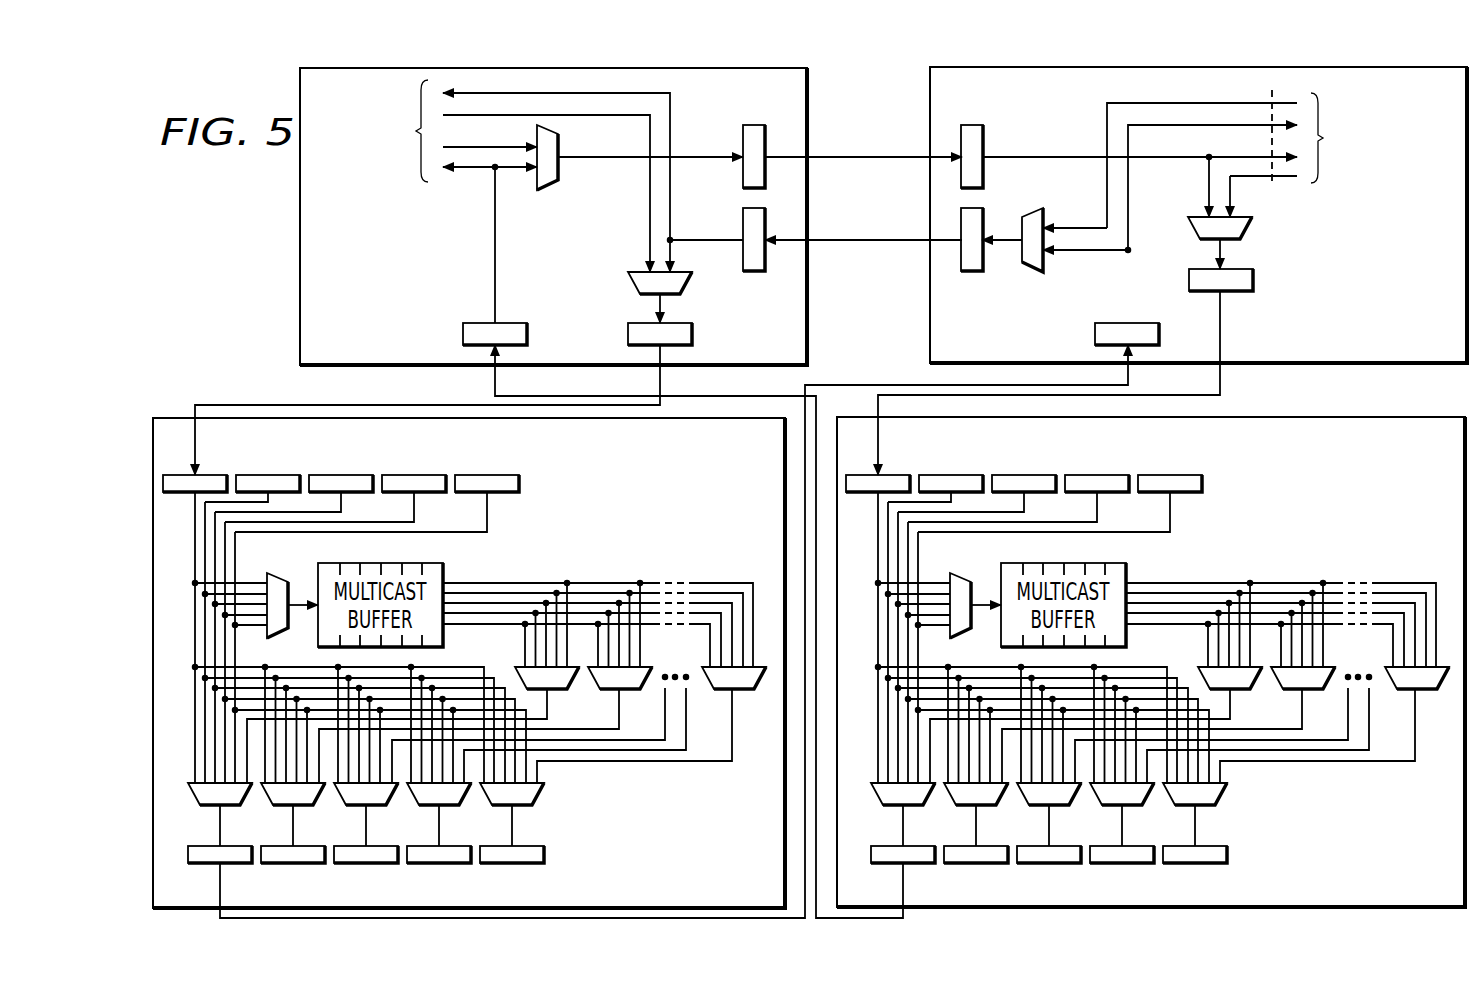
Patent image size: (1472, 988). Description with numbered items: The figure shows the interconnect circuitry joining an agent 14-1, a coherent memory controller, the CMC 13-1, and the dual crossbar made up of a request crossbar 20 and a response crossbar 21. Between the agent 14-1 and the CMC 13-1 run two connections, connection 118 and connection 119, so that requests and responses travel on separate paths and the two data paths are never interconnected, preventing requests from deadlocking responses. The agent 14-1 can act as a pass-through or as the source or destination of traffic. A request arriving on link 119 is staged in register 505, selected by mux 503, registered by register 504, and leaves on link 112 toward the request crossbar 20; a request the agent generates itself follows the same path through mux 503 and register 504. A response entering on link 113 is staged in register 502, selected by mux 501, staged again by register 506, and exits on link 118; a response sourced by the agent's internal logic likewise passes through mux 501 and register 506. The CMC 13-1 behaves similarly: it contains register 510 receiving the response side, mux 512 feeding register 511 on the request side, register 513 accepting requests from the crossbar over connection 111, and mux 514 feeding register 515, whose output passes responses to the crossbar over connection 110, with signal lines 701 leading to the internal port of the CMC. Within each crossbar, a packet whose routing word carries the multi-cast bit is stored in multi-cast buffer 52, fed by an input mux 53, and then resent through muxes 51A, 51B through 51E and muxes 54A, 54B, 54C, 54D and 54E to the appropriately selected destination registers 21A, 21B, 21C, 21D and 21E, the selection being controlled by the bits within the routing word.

The agent 14-1 is at (300, 257).
The CMC 13-1 is at (930, 323).
The mux 501 is at (560, 165).
The register 502 is at (508, 322).
The mux 503 is at (640, 271).
The register 504 is at (692, 335).
The register 505 is at (743, 225).
The register 506 is at (743, 140).
The connection 118 is at (857, 158).
The connection 119 is at (857, 242).
The register 510 is at (983, 137).
The register 511 is at (971, 272).
The mux 512 is at (1046, 264).
The register 513 is at (1143, 323).
The mux 514 is at (1199, 217).
The register 515 is at (1235, 291).
The internal port signal lines 701 is at (1272, 186).
The link 112 is at (241, 405).
The link 113 is at (490, 395).
The connection 111 is at (1128, 372).
The connection 110 is at (1218, 378).
The request crossbar 20 is at (700, 866).
The response crossbar 21 is at (1382, 866).
The destination register 21A is at (898, 474).
The destination register 21B is at (971, 474).
The destination register 21C is at (1044, 474).
The destination register 21D is at (1117, 474).
The destination register 21E is at (1190, 474).
The multiplexer 53 is at (958, 573).
The multi-cast buffer 52 is at (1128, 566).
The mux 51A is at (1237, 689).
The mux 51B is at (1313, 689).
The mux 51E is at (1428, 689).
The mux 54A is at (895, 806).
The mux 54B is at (968, 806).
The mux 54C is at (1041, 806).
The mux 54D is at (1129, 806).
The mux 54E is at (1203, 804).